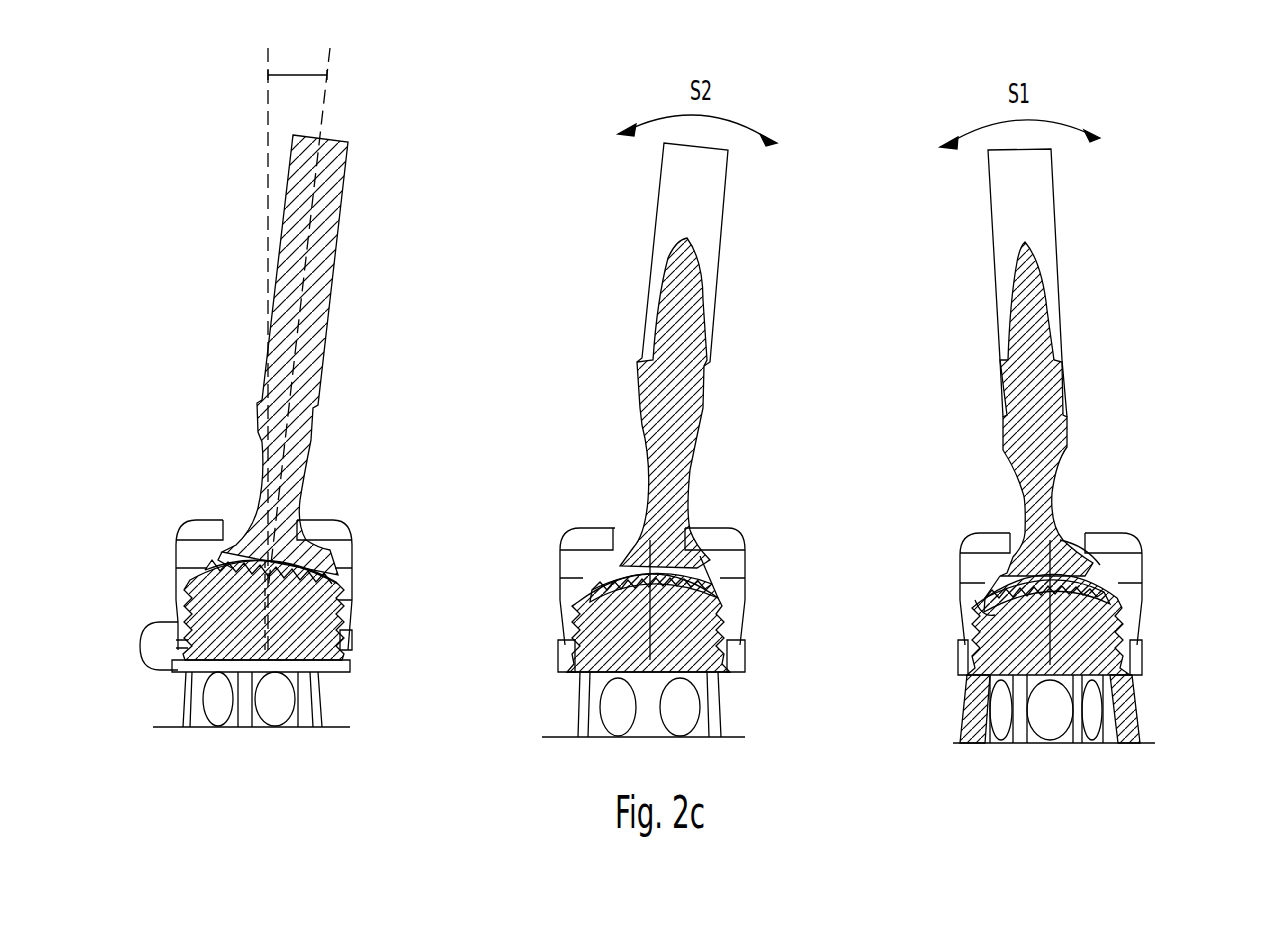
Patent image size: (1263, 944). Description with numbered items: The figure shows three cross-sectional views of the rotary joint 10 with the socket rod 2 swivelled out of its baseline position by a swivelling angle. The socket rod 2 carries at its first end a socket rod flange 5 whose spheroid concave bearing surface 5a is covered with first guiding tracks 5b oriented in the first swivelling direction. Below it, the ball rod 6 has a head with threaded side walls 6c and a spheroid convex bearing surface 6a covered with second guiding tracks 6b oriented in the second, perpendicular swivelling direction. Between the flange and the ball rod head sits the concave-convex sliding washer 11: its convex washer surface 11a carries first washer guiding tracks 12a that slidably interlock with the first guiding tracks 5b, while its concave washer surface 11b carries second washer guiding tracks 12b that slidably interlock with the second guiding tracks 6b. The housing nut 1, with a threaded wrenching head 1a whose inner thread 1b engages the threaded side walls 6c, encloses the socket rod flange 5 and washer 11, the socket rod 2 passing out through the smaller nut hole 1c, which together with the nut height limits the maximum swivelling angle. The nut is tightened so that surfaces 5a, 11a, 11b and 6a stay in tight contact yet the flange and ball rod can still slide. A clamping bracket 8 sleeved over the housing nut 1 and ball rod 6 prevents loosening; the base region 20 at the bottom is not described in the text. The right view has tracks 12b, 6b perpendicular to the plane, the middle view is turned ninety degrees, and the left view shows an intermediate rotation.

The rotary joint 10 is at (200, 317).
The socket rod 2 is at (254, 414).
The housing nut 1 is at (188, 517).
The socket rod flange 5 is at (235, 542).
The concave-convex sliding washer 11 is at (208, 562).
The ball rod 6 is at (220, 613).
The clamping bracket 8 is at (140, 646).
The switch base 20 is at (182, 712).
The concave bearing surface 5a is at (1008, 576).
The first guiding tracks 5b is at (600, 552).
The convex washer surface 11a is at (998, 554).
The concave washer surface 11b is at (700, 556).
The first washer guiding tracks 12a is at (612, 558).
The second washer guiding tracks 12b is at (982, 608).
The convex bearing surface 6a is at (692, 592).
The second guiding tracks 6b is at (1100, 562).
The threaded side walls 6c is at (1122, 640).
The threaded wrenching head 1a is at (1143, 580).
The inner thread 1b is at (1130, 622).
The nut hole 1c is at (1079, 535).